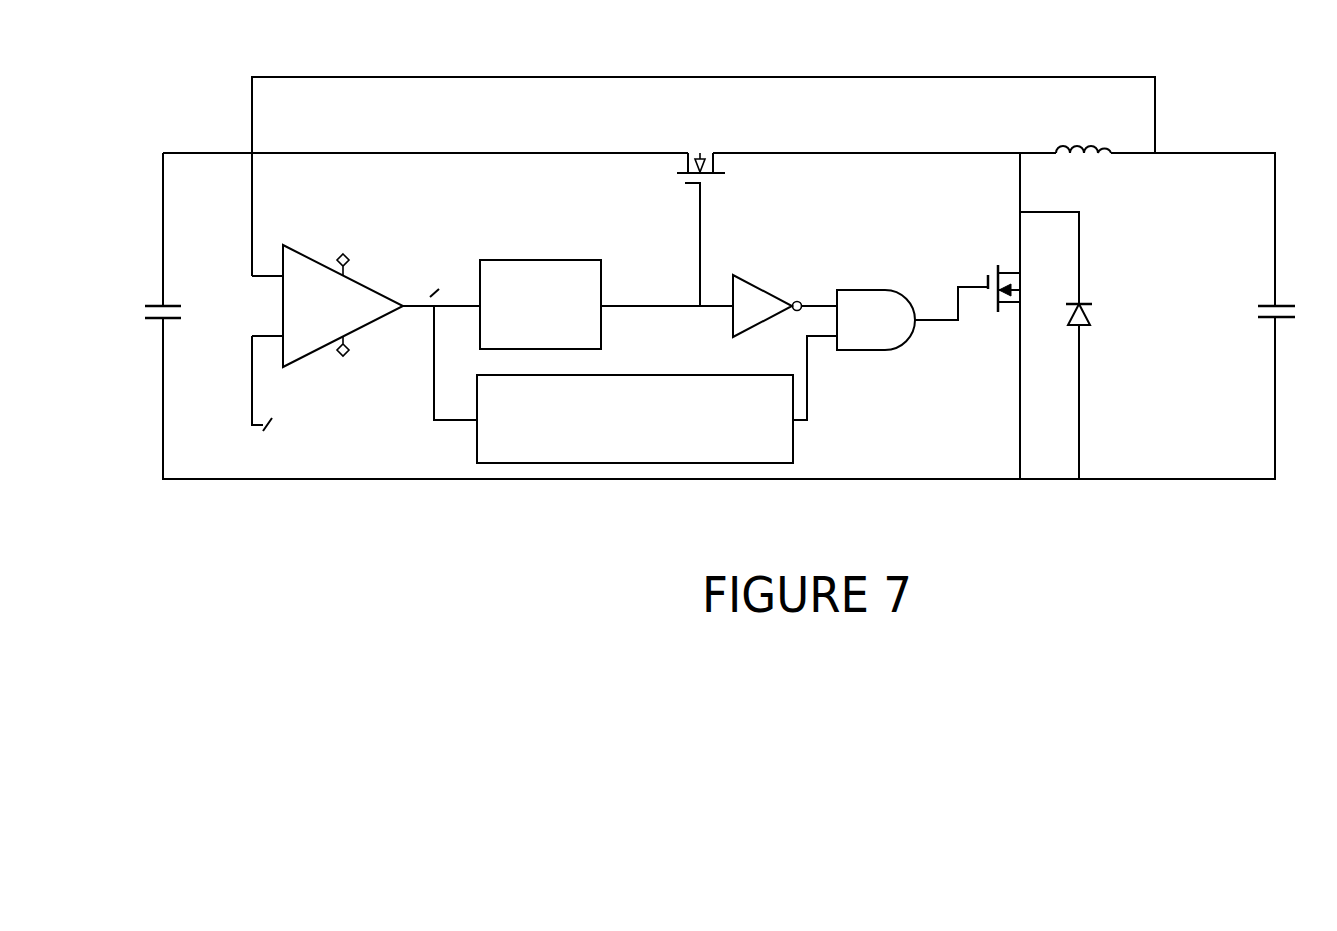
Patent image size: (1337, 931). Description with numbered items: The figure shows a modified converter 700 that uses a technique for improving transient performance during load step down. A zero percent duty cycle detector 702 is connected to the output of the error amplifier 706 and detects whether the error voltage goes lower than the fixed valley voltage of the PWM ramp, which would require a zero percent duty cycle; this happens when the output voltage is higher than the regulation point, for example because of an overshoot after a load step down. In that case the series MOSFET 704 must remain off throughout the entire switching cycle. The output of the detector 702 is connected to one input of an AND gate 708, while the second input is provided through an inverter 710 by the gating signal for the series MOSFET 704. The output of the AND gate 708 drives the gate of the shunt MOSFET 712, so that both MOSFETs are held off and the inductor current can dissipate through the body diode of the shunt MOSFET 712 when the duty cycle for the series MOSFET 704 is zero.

The modified converter 700 is at (677, 41).
The zero percent duty cycle detector 702 is at (794, 450).
The series MOSFET 704 is at (700, 150).
The error amplifier 706 is at (301, 251).
The AND gate 708 is at (847, 290).
The inverter 710 is at (764, 289).
The shunt MOSFET 712 is at (1002, 252).